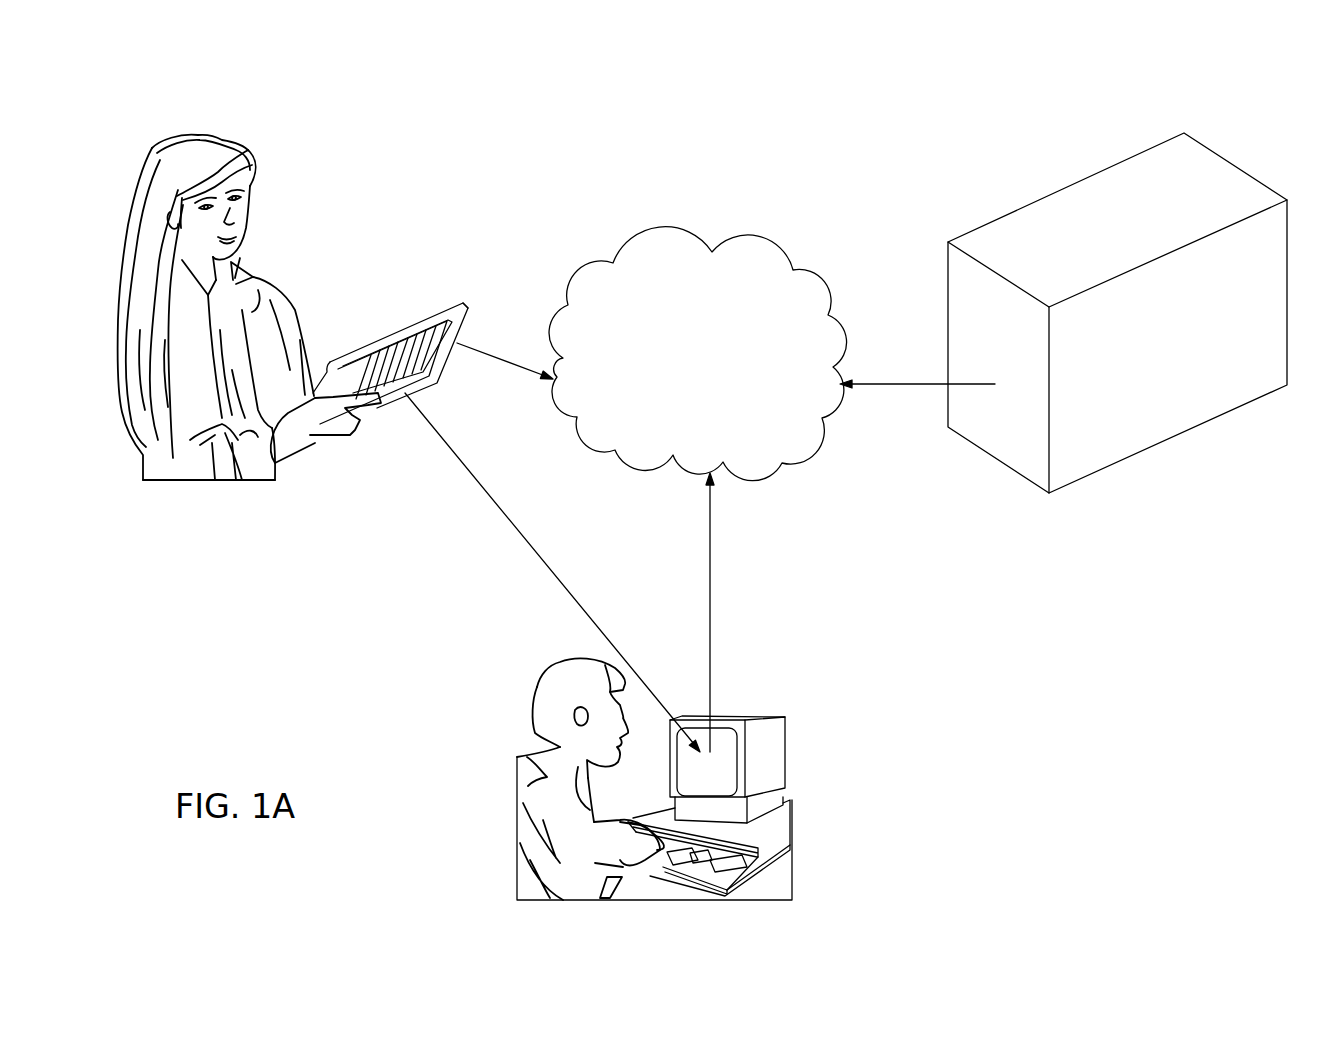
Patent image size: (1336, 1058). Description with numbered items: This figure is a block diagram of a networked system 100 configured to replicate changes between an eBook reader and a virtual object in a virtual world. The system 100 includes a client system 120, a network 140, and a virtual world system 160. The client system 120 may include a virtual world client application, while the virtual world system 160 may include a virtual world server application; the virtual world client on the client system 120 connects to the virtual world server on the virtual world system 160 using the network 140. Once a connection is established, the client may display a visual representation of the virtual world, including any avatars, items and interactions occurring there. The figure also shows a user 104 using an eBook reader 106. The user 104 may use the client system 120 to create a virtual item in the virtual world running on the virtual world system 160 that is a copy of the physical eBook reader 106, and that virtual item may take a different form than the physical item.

The system 100 is at (437, 84).
The user 104 is at (225, 147).
The eBook reader 106 is at (393, 335).
The client system 120 is at (770, 718).
The network 140 is at (710, 372).
The virtual world system 160 is at (1177, 405).